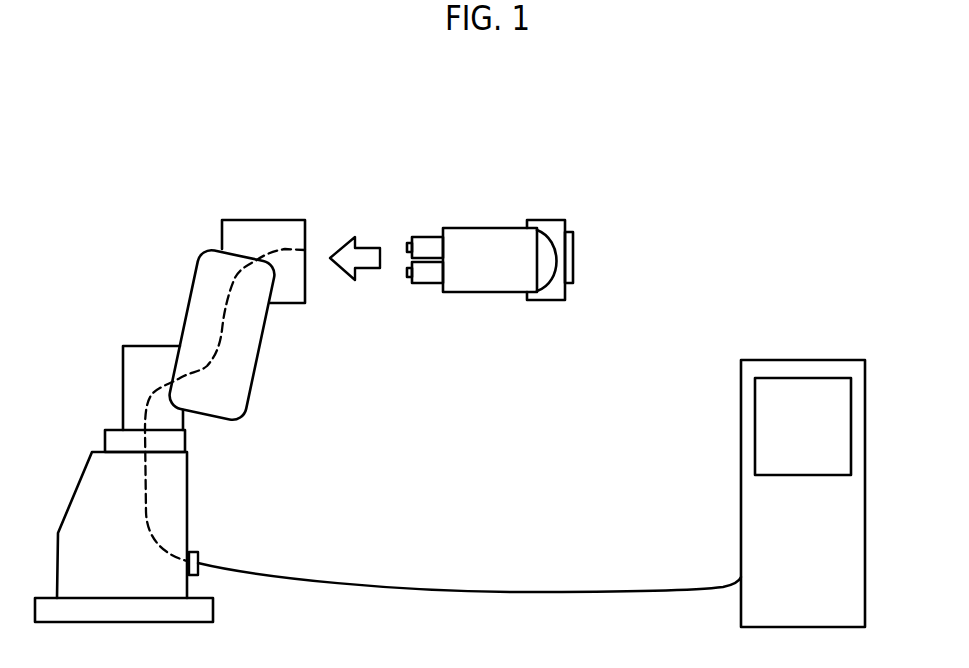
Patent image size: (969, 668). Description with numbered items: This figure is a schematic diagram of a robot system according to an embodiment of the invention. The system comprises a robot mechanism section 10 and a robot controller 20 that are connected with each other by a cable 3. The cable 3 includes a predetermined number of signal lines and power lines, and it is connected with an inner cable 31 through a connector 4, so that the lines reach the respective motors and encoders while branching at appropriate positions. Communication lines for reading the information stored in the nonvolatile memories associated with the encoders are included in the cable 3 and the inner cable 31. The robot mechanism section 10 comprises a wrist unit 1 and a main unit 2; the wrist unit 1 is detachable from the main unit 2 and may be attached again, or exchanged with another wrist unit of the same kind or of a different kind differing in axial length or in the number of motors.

The wrist unit 1 is at (600, 246).
The main unit 2 is at (274, 203).
The cable 3 is at (566, 562).
The connector 4 is at (200, 553).
The robot mechanism section 10 is at (293, 393).
The robot controller 20 is at (795, 339).
The inner cable 31 is at (222, 330).